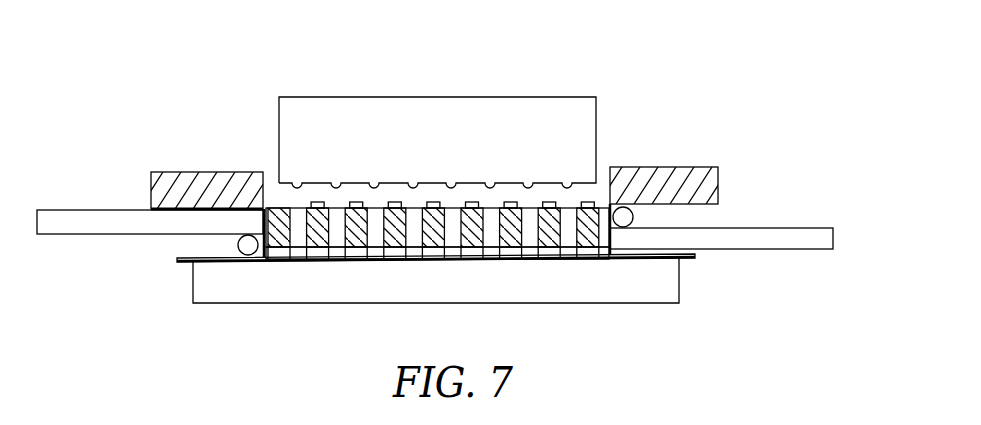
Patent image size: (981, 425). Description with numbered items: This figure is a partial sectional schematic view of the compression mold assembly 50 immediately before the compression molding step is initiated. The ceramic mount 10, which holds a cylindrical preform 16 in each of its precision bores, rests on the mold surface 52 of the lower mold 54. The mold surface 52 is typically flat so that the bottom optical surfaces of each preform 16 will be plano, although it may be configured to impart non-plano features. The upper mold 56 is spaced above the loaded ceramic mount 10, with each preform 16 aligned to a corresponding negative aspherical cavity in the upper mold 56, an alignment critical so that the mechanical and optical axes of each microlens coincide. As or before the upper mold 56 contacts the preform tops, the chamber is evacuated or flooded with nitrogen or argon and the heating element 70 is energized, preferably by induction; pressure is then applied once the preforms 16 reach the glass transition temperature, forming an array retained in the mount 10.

The compression mold assembly 50 is at (744, 80).
The upper mold 56 is at (583, 128).
The cylindrical preform 16 is at (357, 202).
The heating element 70 is at (238, 245).
The ceramic mount 10 is at (553, 240).
The mold surface 52 is at (453, 256).
The lower mold 54 is at (208, 283).